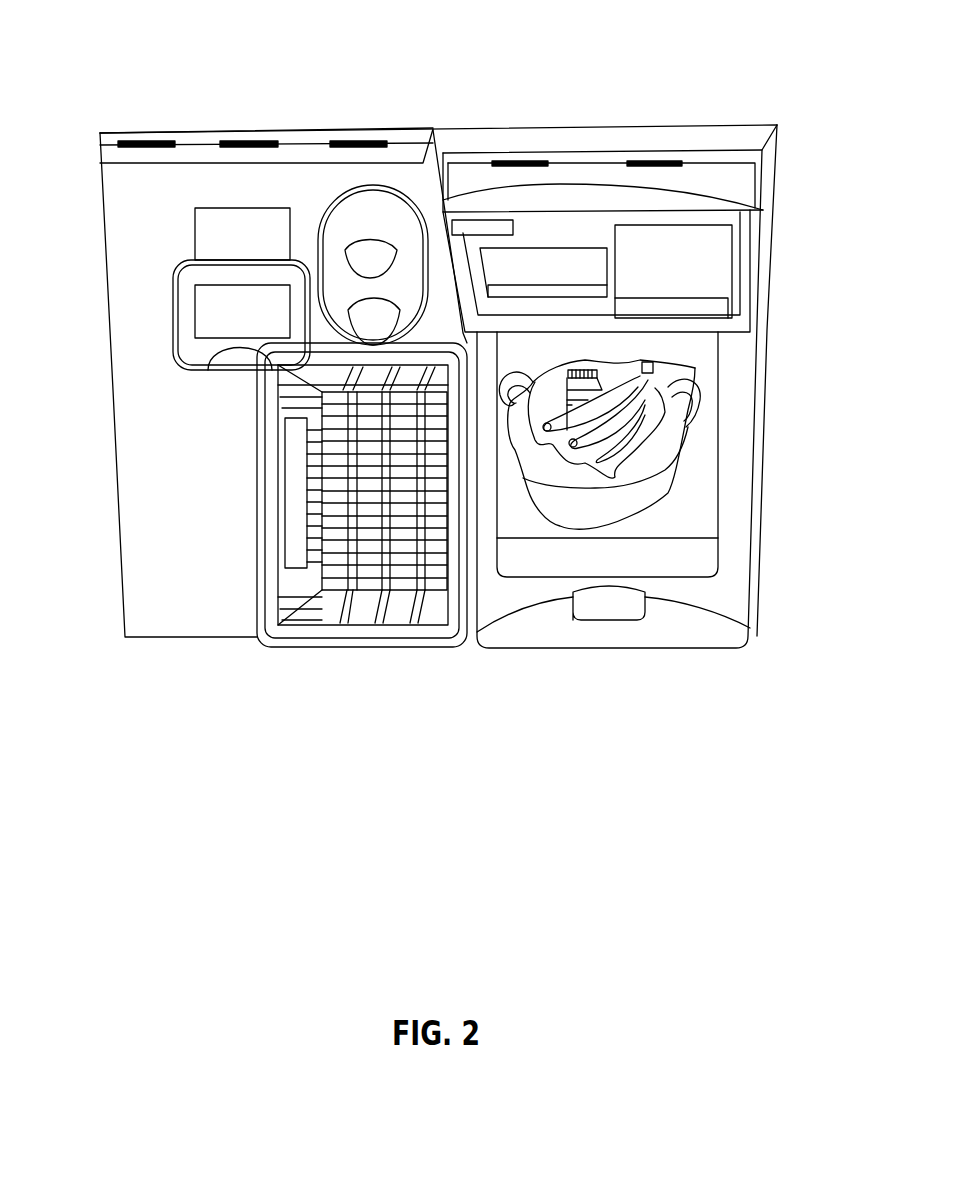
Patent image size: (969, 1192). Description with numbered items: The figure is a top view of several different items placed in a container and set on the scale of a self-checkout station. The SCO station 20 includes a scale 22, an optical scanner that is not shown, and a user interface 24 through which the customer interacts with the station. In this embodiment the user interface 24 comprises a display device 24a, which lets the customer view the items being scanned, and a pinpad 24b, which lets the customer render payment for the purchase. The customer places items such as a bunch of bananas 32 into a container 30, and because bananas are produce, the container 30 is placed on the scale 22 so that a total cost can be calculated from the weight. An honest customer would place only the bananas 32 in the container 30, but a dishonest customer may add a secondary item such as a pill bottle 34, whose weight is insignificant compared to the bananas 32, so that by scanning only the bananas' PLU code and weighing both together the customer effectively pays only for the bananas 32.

The self-checkout (SCO) station 20 is at (713, 150).
The scale 22 is at (532, 525).
The user interface 24 is at (140, 88).
The display device 24a is at (677, 248).
The pinpad 24b is at (173, 326).
The container 30 is at (617, 368).
The bunch of bananas 32 is at (647, 408).
The pill bottle 34 is at (577, 372).